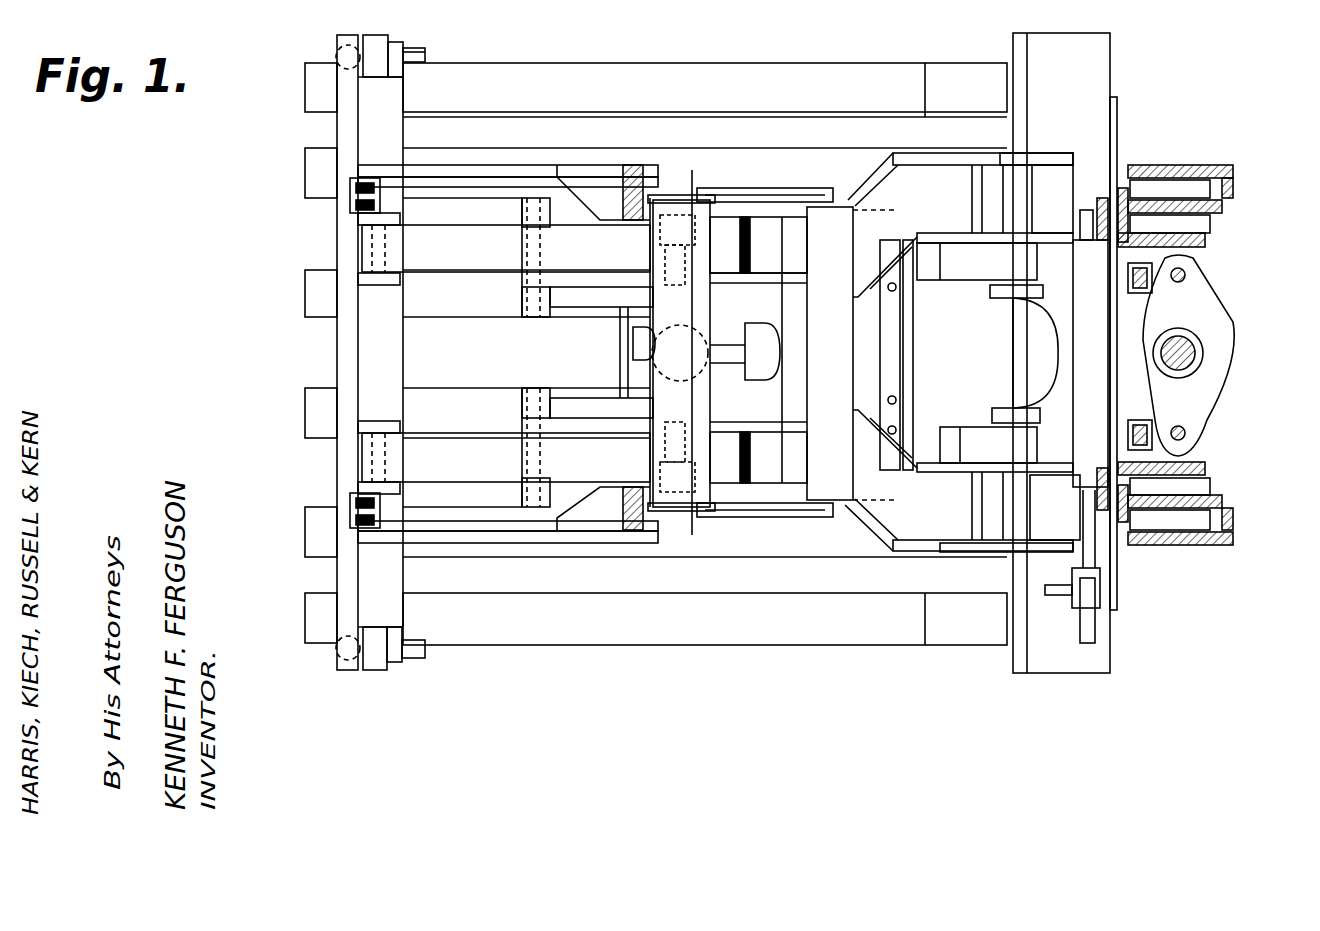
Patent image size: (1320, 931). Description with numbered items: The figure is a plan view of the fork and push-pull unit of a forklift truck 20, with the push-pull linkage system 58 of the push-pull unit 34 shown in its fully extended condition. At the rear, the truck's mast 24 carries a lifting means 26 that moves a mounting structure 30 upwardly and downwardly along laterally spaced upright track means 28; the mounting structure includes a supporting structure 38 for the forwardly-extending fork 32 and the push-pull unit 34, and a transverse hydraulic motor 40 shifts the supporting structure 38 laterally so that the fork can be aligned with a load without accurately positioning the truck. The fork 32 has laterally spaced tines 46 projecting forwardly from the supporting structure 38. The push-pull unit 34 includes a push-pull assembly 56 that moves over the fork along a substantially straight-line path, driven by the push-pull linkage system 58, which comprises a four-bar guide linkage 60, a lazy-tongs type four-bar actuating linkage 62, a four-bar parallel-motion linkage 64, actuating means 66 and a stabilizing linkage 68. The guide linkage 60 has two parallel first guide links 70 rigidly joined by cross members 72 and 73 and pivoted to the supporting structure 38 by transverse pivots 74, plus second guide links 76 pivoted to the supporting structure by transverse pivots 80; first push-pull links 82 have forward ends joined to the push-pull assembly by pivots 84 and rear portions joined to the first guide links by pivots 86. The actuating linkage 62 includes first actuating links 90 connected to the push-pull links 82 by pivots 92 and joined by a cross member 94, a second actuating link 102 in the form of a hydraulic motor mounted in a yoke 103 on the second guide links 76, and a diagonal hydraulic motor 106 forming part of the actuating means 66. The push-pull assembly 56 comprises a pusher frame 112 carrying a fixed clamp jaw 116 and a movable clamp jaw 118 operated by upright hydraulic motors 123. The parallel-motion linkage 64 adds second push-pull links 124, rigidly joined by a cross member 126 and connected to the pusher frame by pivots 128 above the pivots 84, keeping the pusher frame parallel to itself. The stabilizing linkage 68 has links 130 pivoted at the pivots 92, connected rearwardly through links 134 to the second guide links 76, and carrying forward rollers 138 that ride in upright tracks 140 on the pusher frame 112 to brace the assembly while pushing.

The forklift truck 20 is at (1210, 78).
The mast 24 is at (1185, 550).
The lifting means 26 is at (1165, 297).
The upright track means 28 is at (1234, 186).
The mounting structure 30 is at (1120, 612).
The fork 32 is at (695, 647).
The push-pull unit 34 is at (606, 560).
The supporting structure 38 is at (1073, 652).
The transverse hydraulic motor 40 is at (1087, 388).
The tines 46 is at (660, 70).
The push-pull assembly 56 is at (355, 676).
The push-pull linkage system 58 is at (742, 165).
The four-bar guide linkage 60 is at (962, 562).
The four-bar actuating linkage 62 is at (696, 530).
The four-bar parallel-motion linkage 64 is at (480, 567).
The actuating means 66 is at (750, 390).
The stabilizing linkage 68 is at (455, 562).
The first guide links 70 is at (955, 150).
The cross member 72 is at (830, 353).
The cross member 73 is at (695, 320).
The transverse pivots 74 is at (1065, 180).
The second guide links 76 is at (950, 240).
The transverse pivots 80 is at (1030, 270).
The first push-pull links 82 is at (506, 353).
The transverse pivots 84 is at (362, 248).
The transverse pivots 86 is at (745, 245).
The first actuating links 90 is at (566, 318).
The transverse pivots 92 is at (545, 240).
The cross member 94 is at (622, 345).
The second actuating link 102 is at (890, 330).
The yoke 103 is at (910, 350).
The hydraulic motor 106 is at (633, 350).
The pusher frame 112 is at (337, 354).
The fixed clamp jaw 116 is at (385, 350).
The movable clamp jaw 118 is at (383, 42).
The upright hydraulic motors 123 is at (348, 45).
The second push-pull links 124 is at (462, 160).
The cross member 126 is at (603, 165).
The transverse pivots 128 is at (358, 155).
The links 130 is at (500, 172).
The links 134 is at (785, 186).
The rollers 138 is at (350, 190).
The upright tracks 140 is at (380, 188).